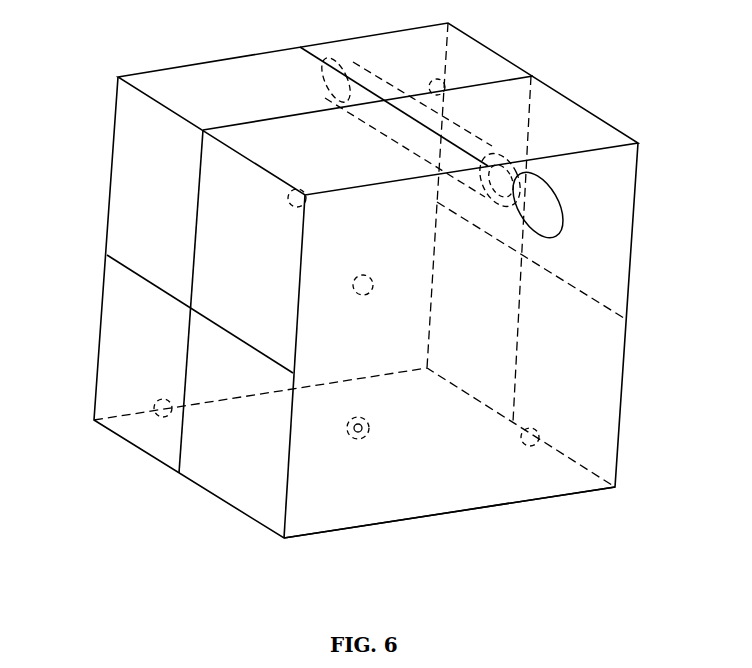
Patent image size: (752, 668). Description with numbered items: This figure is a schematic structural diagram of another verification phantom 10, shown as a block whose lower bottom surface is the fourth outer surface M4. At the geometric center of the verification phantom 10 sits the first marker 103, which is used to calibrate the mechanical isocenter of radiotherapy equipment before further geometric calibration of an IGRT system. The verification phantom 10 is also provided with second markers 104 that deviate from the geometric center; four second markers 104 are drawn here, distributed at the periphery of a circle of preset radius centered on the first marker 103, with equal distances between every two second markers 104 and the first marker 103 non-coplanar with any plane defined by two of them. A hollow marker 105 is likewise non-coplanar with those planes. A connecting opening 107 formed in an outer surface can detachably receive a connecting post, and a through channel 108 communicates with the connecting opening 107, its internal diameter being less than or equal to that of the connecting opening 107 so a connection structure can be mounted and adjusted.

The verification phantom 10 is at (591, 119).
The first marker 103 is at (372, 273).
The second marker 104 is at (290, 200).
The hollow marker 105 is at (352, 436).
The connecting opening 107 is at (538, 195).
The through channel 108 is at (378, 82).
The fourth outer surface M4 is at (397, 537).